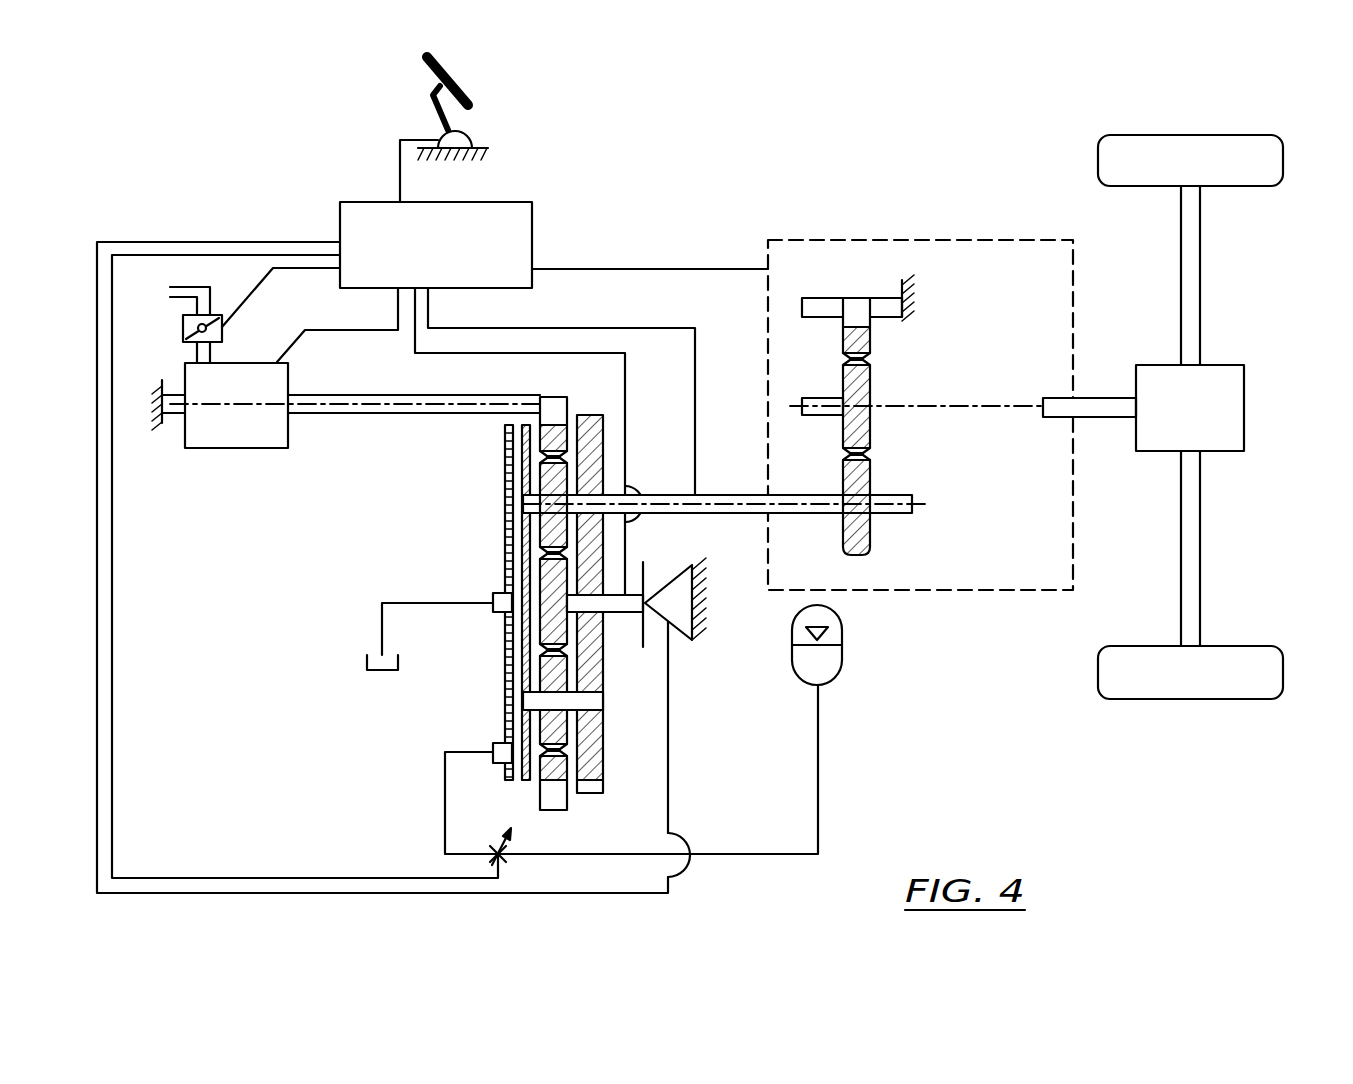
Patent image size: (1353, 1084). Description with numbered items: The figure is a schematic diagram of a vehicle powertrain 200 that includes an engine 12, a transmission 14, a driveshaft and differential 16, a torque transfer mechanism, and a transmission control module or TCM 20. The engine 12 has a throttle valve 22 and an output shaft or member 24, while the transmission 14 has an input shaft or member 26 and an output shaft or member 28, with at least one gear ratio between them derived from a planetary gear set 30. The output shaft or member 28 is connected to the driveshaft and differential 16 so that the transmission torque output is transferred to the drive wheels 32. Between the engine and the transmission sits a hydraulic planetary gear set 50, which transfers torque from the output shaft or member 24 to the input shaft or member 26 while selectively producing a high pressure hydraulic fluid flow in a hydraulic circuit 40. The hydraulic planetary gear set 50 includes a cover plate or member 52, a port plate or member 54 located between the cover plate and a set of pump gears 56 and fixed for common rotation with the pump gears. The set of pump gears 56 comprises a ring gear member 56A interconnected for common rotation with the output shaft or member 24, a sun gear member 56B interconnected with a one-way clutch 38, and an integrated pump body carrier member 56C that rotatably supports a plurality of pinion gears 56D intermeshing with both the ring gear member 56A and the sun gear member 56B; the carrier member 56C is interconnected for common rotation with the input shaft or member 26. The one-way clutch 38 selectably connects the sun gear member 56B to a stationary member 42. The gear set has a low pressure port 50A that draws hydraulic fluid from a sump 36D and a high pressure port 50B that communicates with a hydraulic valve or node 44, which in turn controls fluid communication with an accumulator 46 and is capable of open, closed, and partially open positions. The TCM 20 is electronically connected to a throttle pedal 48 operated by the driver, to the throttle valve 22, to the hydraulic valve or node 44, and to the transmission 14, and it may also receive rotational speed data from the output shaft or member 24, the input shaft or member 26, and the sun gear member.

The vehicle powertrain 200 is at (665, 152).
The engine 12 is at (222, 450).
The transmission 14 is at (865, 240).
The driveshaft and differential 16 is at (1225, 415).
The transmission control module (TCM) 20 is at (417, 262).
The throttle valve 22 is at (183, 336).
The output shaft or member 24 is at (355, 393).
The input shaft or member 26 is at (748, 494).
The output shaft or member 28 is at (1100, 420).
The planetary gear set 30 is at (864, 563).
The drive wheels 32 is at (1200, 155).
The sump 36D is at (380, 680).
The one-way clutch 38 is at (679, 628).
The hydraulic circuit 40 is at (424, 793).
The stationary member 42 is at (700, 565).
The hydraulic valve or node 44 is at (505, 858).
The accumulator 46 is at (830, 680).
The throttle pedal 48 is at (455, 82).
The hydraulic planetary gear set 50 is at (560, 373).
The low pressure port 50A is at (408, 602).
The high pressure port 50B is at (460, 752).
The cover plate or member 52 is at (505, 475).
The port plate or member 54 is at (526, 780).
The set of pump gears 56 is at (516, 607).
The ring gear member 56A is at (550, 398).
The sun gear member 56B is at (553, 580).
The integrated pump body carrier member 56C is at (600, 745).
The pinion gears 56D is at (553, 680).